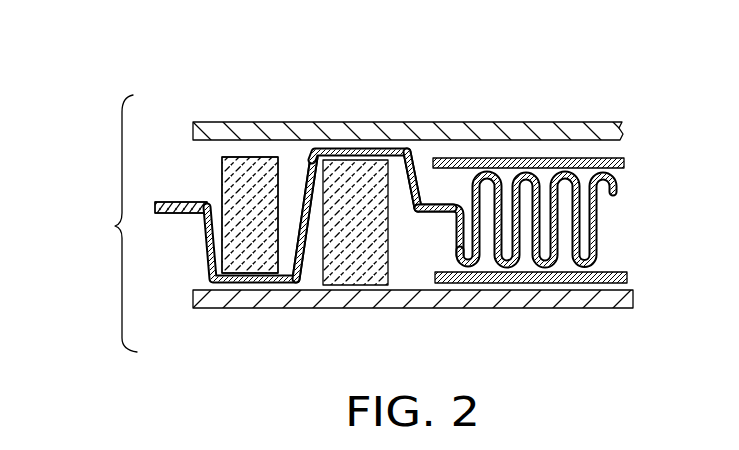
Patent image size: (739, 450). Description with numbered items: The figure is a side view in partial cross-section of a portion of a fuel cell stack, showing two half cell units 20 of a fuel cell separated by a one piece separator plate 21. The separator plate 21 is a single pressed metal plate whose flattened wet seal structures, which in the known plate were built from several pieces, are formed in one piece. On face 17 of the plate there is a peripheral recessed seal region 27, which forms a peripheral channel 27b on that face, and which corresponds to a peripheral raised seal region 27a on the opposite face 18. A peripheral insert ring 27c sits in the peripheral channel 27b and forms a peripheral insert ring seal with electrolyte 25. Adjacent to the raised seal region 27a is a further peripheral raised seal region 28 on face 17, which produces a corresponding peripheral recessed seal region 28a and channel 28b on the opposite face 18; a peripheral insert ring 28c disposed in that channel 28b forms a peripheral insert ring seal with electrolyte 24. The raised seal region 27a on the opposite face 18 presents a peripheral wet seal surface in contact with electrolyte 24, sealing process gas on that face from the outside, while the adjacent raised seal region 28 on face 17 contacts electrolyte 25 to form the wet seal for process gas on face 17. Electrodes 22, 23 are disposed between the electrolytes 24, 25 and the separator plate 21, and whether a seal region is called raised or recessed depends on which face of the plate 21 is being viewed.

The half cell units 20 is at (572, 56).
The face 17 is at (172, 202).
The opposite face 18 is at (163, 214).
The one piece separator plate 21 is at (598, 230).
The electrode 22 is at (623, 160).
The electrode 23 is at (628, 278).
The electrolyte 24 is at (593, 310).
The electrolyte 25 is at (348, 122).
The peripheral recessed seal region 27 is at (235, 278).
The peripheral raised seal region 27a is at (250, 286).
The peripheral channel 27b is at (283, 229).
The peripheral insert ring 27c is at (252, 157).
The peripheral raised seal region 28 is at (388, 167).
The peripheral recessed seal region 28a is at (405, 158).
The channel 28b is at (397, 197).
The peripheral insert ring 28c is at (356, 274).